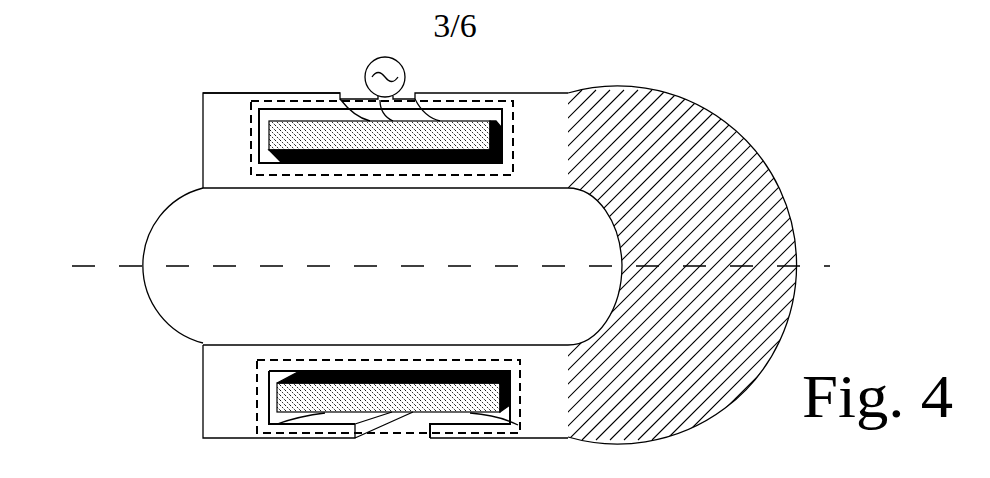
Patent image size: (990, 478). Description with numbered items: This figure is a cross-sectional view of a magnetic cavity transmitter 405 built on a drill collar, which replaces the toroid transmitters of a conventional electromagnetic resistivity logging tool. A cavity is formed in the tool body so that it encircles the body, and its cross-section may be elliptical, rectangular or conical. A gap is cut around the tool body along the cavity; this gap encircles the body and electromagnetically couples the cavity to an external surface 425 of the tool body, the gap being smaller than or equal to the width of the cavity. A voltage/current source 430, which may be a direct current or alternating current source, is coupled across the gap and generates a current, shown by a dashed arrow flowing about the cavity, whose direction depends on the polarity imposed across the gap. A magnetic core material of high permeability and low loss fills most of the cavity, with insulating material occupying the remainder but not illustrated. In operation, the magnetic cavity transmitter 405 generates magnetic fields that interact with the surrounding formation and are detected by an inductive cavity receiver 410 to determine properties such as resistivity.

The magnetic cavity transmitter 405 is at (566, 242).
The inductive cavity receiver 410 is at (683, 180).
The external surface 425 is at (234, 93).
The voltage/current source 430 is at (367, 71).